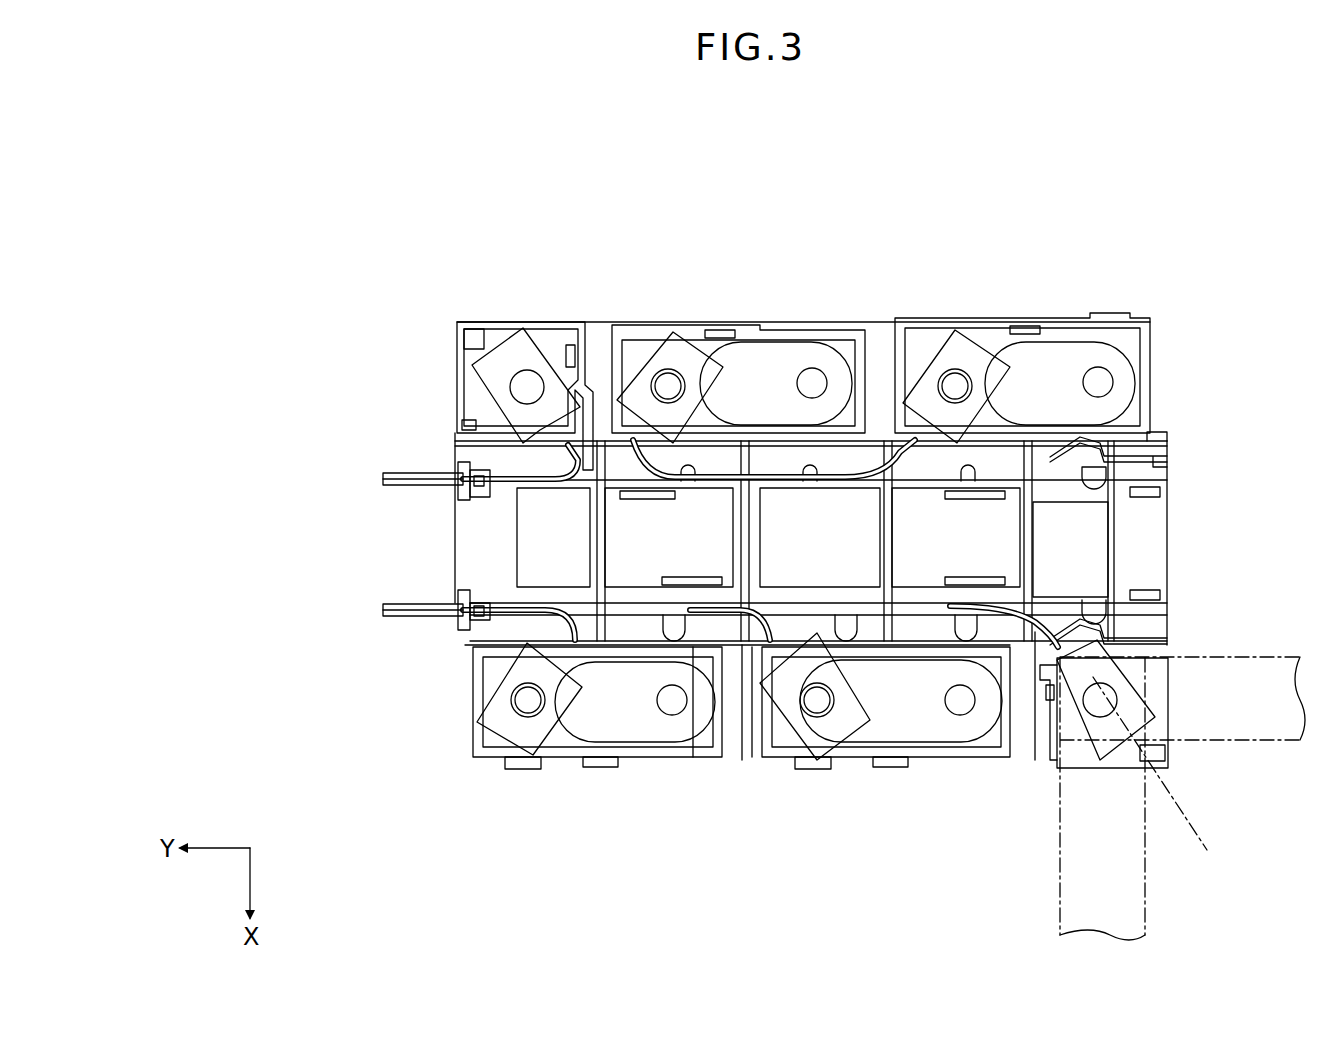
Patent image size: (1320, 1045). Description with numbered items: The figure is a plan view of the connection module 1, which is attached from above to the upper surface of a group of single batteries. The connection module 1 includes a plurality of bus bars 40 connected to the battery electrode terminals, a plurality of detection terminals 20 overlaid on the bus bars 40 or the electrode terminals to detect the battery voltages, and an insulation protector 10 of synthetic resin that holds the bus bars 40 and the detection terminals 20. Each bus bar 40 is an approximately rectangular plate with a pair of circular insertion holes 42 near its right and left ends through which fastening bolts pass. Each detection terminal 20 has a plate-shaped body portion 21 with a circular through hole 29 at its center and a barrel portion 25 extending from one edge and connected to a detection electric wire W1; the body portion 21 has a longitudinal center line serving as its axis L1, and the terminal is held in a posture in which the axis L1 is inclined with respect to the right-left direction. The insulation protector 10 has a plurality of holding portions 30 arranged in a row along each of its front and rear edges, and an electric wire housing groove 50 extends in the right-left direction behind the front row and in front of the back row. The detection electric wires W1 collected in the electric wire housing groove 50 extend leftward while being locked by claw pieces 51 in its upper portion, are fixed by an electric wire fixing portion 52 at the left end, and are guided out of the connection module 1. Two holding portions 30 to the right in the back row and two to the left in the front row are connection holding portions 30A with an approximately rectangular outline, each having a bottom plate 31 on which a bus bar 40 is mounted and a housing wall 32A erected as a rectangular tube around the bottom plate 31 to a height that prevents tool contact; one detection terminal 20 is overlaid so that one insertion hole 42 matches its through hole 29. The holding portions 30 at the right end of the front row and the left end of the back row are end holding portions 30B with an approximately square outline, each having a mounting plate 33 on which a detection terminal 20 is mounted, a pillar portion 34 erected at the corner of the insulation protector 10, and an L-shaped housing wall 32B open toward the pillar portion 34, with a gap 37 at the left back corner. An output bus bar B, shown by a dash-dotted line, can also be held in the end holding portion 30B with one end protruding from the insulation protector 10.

The connection module 1 is at (437, 247).
The insulation protector 10 is at (1130, 335).
The detection terminal 20 is at (512, 352).
The body portion 21 is at (925, 390).
The barrel portion 25 is at (883, 410).
The through hole 29 is at (952, 368).
The holding portion 30 is at (525, 396).
The connection holding portion 30A is at (705, 330).
The end holding portion 30B is at (548, 328).
The bottom plate 31 is at (703, 749).
The housing wall 32A is at (565, 757).
The housing wall 32B is at (1048, 730).
The mounting plate 33 is at (1160, 725).
The pillar portion 34 is at (1150, 750).
The gap 37 is at (745, 640).
The bus bar 40 is at (780, 380).
The insertion hole 42 is at (1057, 413).
The electric wire housing groove 50 is at (1128, 462).
The claw piece 51 is at (520, 470).
The electric wire fixing portion 52 is at (466, 607).
The detection electric wire W1 is at (890, 472).
The output bus bar B is at (1238, 680).
The axis L1 is at (1162, 778).